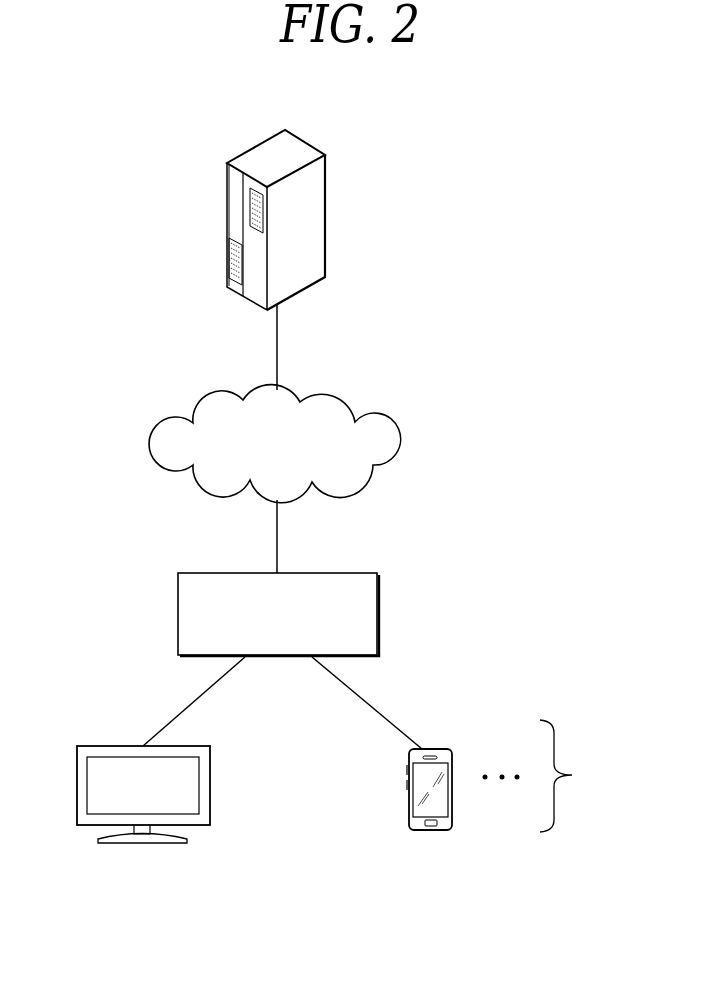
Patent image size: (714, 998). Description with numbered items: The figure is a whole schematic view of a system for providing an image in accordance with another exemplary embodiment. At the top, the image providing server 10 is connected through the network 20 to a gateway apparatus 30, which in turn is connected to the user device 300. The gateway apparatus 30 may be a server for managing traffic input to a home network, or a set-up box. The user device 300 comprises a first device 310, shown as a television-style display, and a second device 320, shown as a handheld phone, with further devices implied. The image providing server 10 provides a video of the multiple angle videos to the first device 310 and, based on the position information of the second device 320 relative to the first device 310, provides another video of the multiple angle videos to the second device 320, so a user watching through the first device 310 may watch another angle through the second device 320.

The image providing server 10 is at (305, 138).
The network 20 is at (335, 397).
The gateway apparatus 30 is at (338, 572).
The first device 310 is at (131, 745).
The second device 320 is at (430, 748).
The user device 300 is at (551, 776).